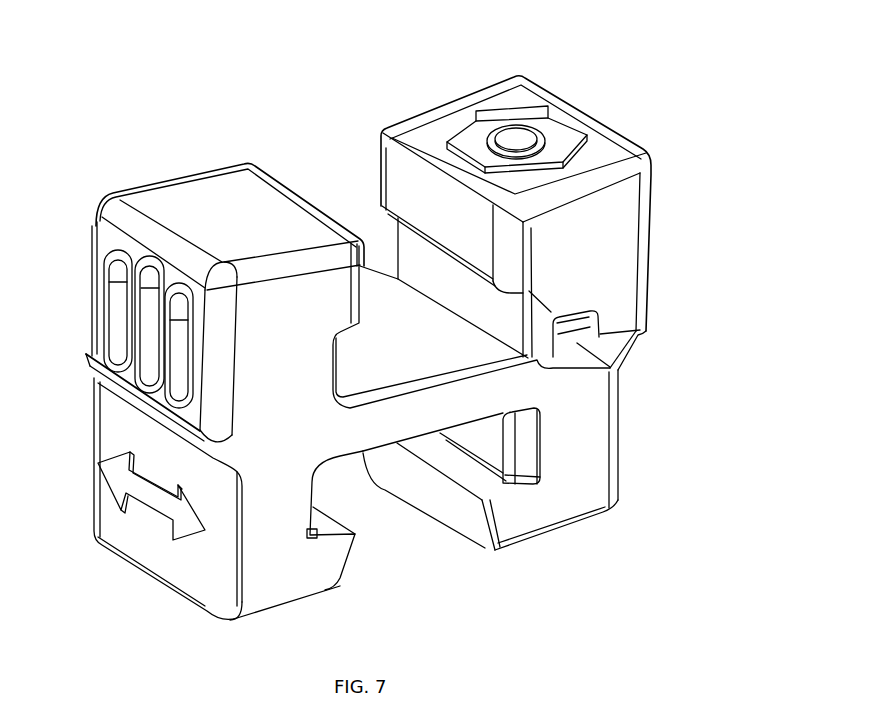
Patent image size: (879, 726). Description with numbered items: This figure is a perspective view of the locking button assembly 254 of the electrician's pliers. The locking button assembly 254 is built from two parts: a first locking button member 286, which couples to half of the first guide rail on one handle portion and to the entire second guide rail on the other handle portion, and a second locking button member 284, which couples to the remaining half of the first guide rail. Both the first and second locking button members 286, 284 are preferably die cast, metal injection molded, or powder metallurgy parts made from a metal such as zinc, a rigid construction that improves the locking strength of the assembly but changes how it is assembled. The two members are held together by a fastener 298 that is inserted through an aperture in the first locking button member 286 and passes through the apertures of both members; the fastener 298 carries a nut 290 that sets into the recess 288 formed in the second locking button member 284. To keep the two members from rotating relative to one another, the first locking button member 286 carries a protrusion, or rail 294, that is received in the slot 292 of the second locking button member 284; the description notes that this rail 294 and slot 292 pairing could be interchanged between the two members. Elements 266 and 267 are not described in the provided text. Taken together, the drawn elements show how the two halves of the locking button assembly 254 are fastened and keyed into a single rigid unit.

The locking button assembly 254 is at (688, 119).
The body 266 is at (422, 258).
The bar 267 is at (463, 438).
The second locking button member 284 is at (412, 117).
The first locking button member 286 is at (182, 180).
The recess 288 is at (568, 121).
The nut 290 is at (501, 124).
The slot 292 is at (635, 335).
The rail 294 is at (615, 372).
The fastener 298 is at (516, 137).